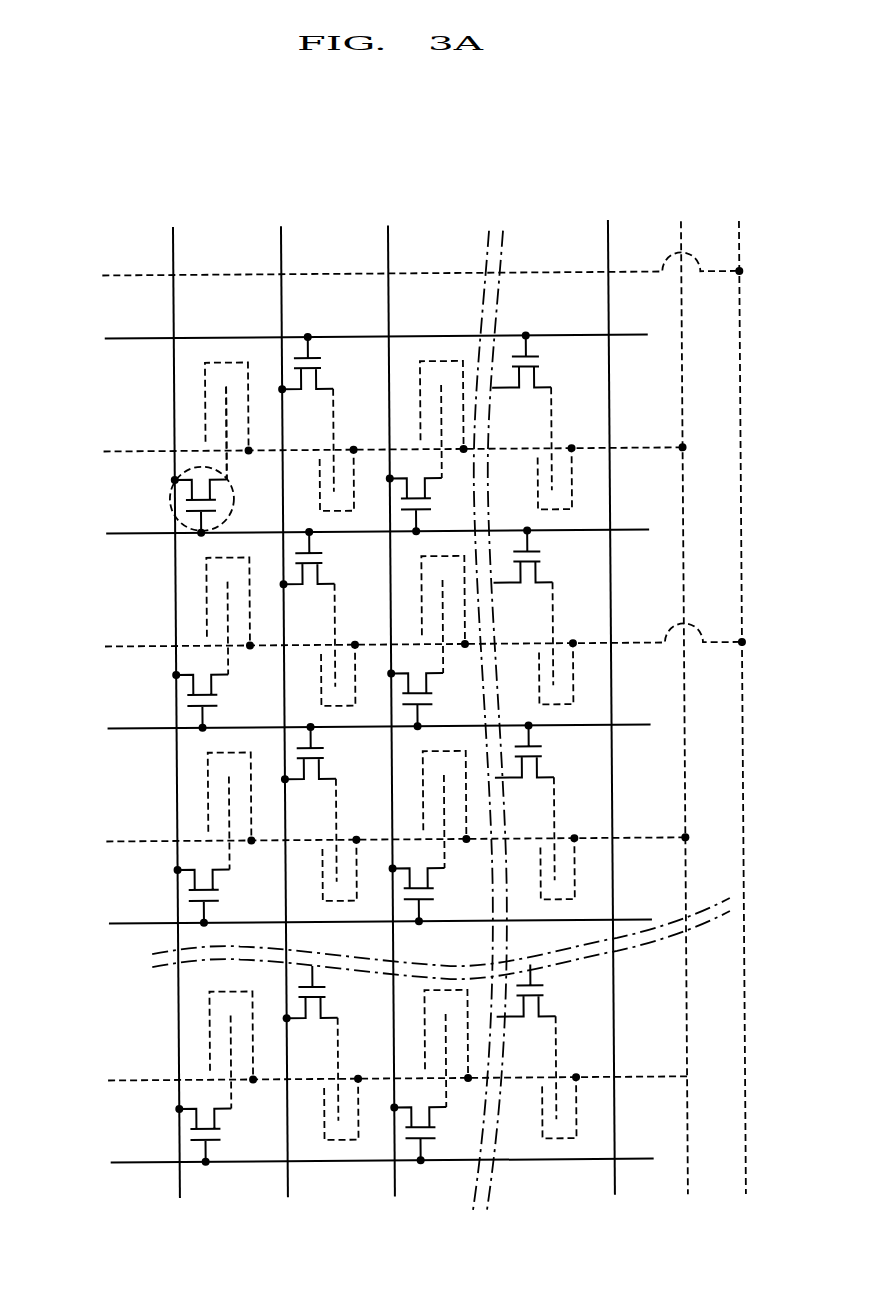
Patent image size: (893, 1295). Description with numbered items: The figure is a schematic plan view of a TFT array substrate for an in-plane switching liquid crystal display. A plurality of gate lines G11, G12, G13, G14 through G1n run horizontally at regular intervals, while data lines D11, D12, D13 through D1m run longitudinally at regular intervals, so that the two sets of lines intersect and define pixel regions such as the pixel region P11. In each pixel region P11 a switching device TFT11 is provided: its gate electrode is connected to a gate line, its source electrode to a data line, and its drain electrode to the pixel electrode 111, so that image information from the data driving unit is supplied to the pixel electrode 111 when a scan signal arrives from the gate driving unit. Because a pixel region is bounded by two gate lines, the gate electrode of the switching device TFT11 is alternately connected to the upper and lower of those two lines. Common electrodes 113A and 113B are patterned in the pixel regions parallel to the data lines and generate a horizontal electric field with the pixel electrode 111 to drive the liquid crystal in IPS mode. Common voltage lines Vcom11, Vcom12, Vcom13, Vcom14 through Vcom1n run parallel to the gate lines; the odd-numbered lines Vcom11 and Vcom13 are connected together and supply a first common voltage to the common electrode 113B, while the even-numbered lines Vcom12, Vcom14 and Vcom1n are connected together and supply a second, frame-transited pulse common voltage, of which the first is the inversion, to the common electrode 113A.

The pixel region P11 is at (190, 348).
The data line D11 is at (175, 697).
The data line D12 is at (284, 696).
The data line D13 is at (391, 695).
The data line D1m is at (611, 694).
The gate line G11 is at (356, 337).
The gate line G12 is at (357, 532).
The gate line G13 is at (359, 728).
The gate line G14 is at (360, 922).
The gate line G1n is at (362, 1164).
The common voltage line Vcom11 is at (389, 270).
The common voltage line Vcom12 is at (362, 450).
The common voltage line Vcom13 is at (391, 640).
The common voltage line Vcom14 is at (363, 839).
The common voltage line Vcom1n is at (363, 1080).
The switching device TFT11 is at (172, 499).
The pixel electrode 111 is at (225, 417).
The common electrode 113A is at (204, 383).
The common electrode 113B is at (204, 580).